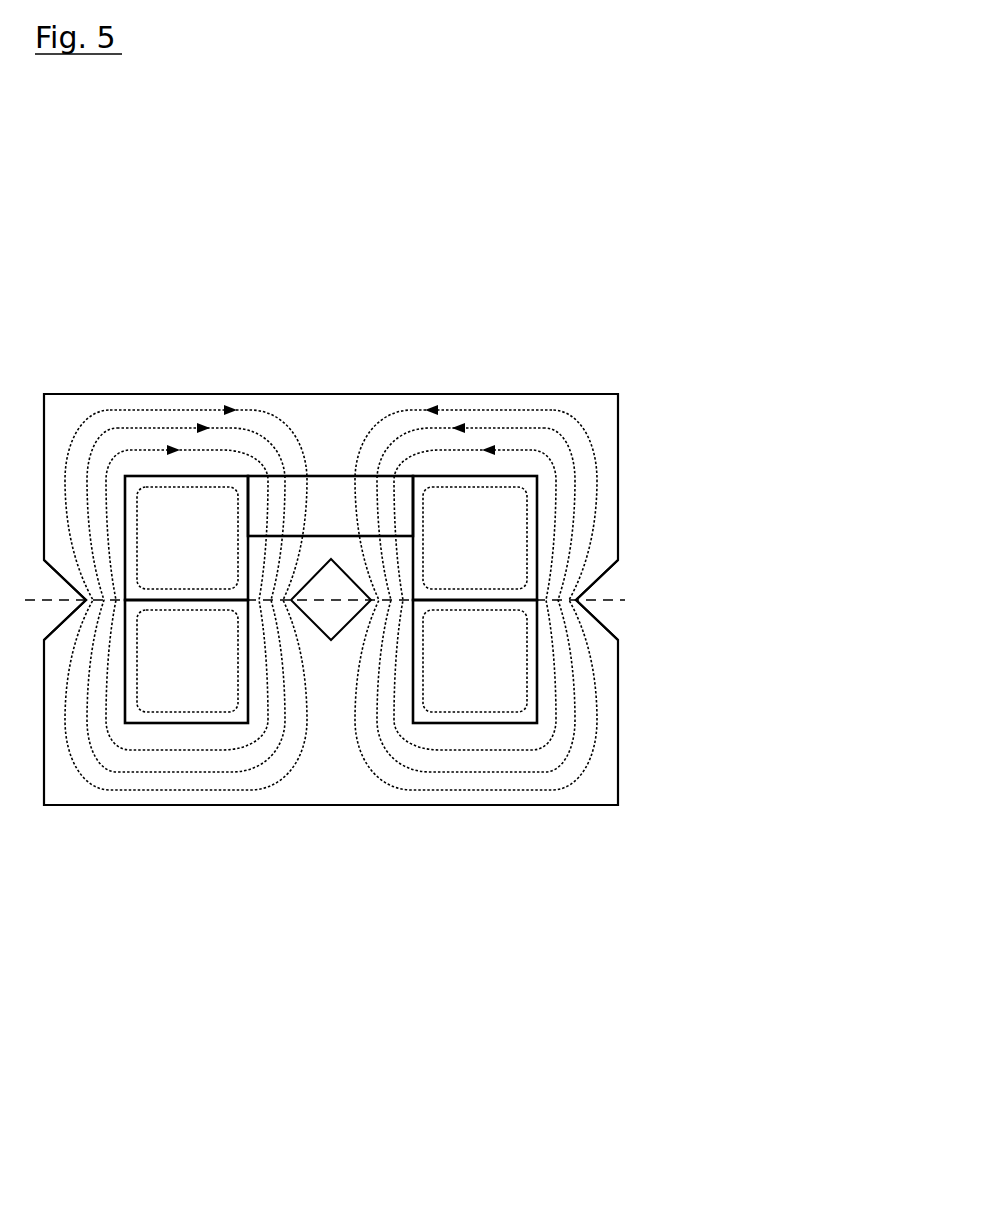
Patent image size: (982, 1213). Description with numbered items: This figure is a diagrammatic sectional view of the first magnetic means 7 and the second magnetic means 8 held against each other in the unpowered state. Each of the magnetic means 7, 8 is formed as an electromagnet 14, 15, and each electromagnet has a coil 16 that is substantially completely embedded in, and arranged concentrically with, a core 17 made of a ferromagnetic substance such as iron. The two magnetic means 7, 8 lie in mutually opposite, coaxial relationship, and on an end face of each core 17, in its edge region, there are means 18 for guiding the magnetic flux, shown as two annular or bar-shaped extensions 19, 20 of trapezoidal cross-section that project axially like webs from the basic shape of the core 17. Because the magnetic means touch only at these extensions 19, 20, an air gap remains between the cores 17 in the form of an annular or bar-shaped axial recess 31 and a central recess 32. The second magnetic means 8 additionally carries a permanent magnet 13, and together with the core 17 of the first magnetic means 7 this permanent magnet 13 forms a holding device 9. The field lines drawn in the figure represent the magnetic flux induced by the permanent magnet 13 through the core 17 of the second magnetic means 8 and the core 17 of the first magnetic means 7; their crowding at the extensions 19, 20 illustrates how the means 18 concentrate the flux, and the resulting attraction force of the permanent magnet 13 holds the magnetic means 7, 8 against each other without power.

The first magnetic means 7 is at (495, 928).
The second magnetic means 8 is at (562, 245).
The holding device 9 is at (106, 138).
The permanent magnet 13 is at (305, 500).
The electromagnet 14 is at (750, 818).
The electromagnet 15 is at (785, 263).
The coil 16 is at (505, 532).
The core 17 is at (250, 600).
The means for guiding the magnetic flux 18 is at (785, 633).
The annular or bar-shaped extension 19 is at (610, 612).
The annular or bar-shaped extension 20 is at (420, 600).
The annular or bar-shaped axial recess 31 is at (530, 588).
The central recess 32 is at (328, 612).